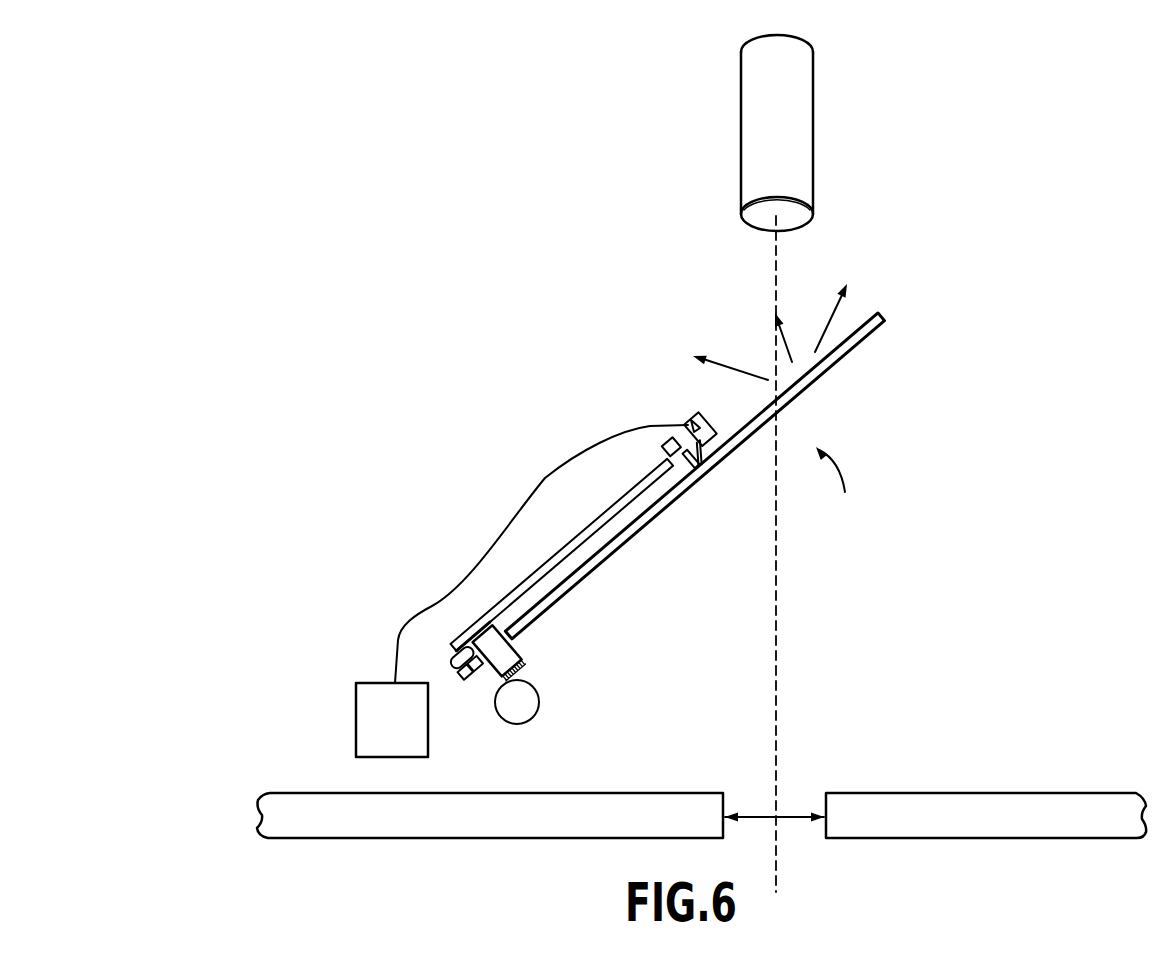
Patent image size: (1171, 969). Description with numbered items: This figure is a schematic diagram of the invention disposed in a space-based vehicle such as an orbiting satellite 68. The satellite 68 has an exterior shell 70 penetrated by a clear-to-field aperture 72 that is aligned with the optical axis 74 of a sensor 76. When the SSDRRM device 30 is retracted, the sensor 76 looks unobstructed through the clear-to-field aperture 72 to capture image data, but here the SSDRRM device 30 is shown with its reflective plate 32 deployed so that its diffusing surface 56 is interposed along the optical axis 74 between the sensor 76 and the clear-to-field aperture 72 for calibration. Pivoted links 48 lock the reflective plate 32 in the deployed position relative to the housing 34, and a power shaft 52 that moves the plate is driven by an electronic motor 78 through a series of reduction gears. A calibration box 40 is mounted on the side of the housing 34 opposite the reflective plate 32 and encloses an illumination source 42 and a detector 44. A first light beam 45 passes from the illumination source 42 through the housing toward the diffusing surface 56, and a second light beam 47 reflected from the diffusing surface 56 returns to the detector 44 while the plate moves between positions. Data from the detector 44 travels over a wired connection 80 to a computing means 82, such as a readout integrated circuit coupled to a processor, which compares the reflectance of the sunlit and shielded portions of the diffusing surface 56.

The SSDRRM device 30 is at (839, 486).
The reflective plate 32 is at (833, 357).
The housing 34 is at (610, 518).
The calibration box 40 is at (705, 418).
The illumination source 42 is at (665, 437).
The detector 44 is at (691, 420).
The first light beam 45 is at (697, 467).
The second light beam 47 is at (700, 450).
The pivoted links 48 is at (465, 678).
The power shaft 52 is at (520, 643).
The diffusing surface 56 is at (865, 320).
The orbiting satellite 68 is at (208, 773).
The exterior shell 70 is at (323, 822).
The clear-to-field aperture 72 is at (770, 815).
The optical axis 74 is at (777, 677).
The sensor 76 is at (750, 133).
The electronic motor 78 is at (530, 698).
The wired connection 80 is at (498, 532).
The computing means 82 is at (406, 735).